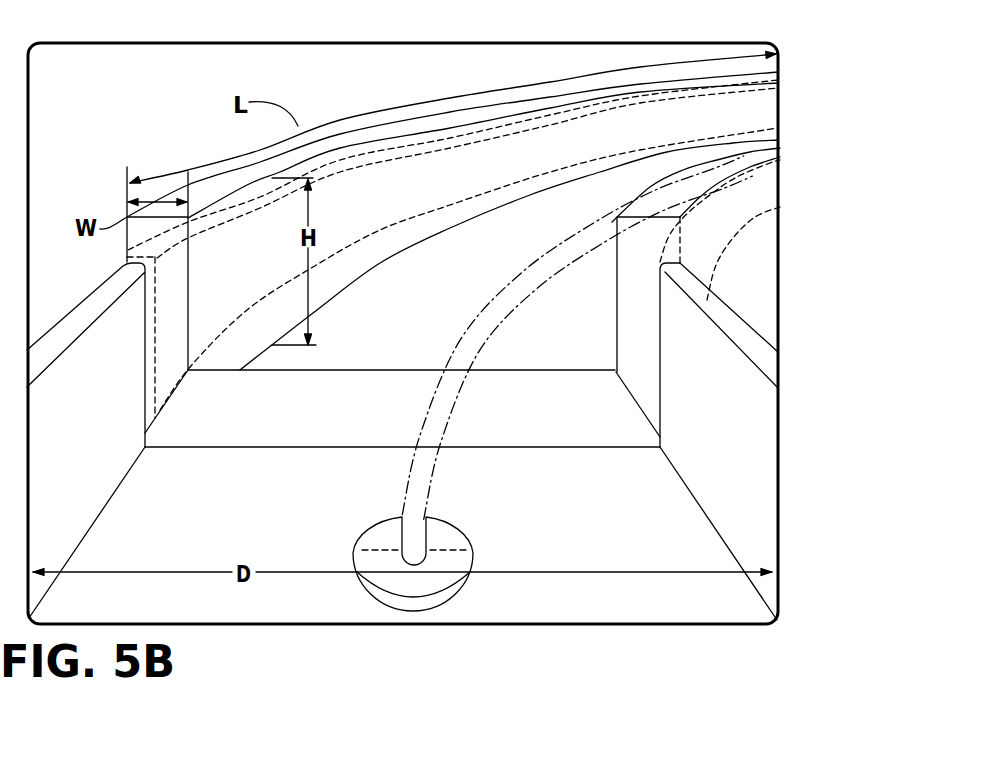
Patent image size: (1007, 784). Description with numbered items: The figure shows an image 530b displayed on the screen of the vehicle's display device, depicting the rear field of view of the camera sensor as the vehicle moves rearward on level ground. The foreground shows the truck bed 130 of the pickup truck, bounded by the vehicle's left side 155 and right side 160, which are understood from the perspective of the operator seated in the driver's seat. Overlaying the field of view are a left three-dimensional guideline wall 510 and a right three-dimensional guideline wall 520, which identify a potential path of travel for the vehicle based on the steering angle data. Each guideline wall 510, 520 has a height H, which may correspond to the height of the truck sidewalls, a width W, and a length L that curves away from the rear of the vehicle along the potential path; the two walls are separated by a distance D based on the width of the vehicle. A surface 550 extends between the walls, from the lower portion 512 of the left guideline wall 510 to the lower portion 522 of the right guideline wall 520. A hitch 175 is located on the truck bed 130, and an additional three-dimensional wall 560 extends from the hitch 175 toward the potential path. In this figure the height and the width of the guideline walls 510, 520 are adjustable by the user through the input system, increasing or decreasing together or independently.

The truck bed 130 is at (650, 493).
The left side 155 is at (747, 346).
The right side 160 is at (100, 302).
The hitch 175 is at (398, 538).
The left three-dimensional guideline wall 510 is at (720, 168).
The lower portion of the left guideline wall 512 is at (743, 317).
The right three-dimensional guideline wall 520 is at (218, 183).
The lower portion of the right guideline wall 522 is at (400, 257).
The image 530b is at (782, 243).
The surface 550 is at (493, 240).
The additional three-dimensional wall 560 is at (550, 250).